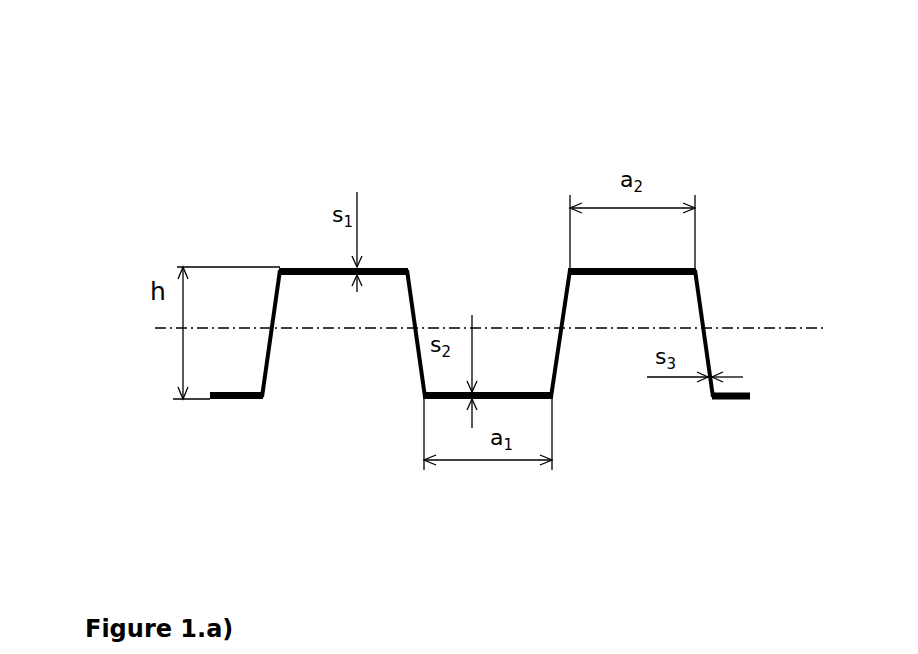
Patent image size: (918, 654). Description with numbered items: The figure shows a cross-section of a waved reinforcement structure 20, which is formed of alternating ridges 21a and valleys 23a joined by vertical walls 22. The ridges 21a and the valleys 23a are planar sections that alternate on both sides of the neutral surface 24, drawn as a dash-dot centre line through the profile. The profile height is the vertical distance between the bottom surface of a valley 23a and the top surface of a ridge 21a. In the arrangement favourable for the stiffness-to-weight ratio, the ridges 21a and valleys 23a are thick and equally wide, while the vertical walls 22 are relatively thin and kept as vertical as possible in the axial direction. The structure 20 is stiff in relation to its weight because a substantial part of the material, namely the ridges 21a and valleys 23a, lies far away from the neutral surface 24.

The waved reinforcement structure 20 is at (517, 207).
The ridge 21a is at (322, 267).
The vertical wall 22 is at (707, 312).
The valley 23a is at (517, 392).
The neutral surface 24 is at (163, 328).